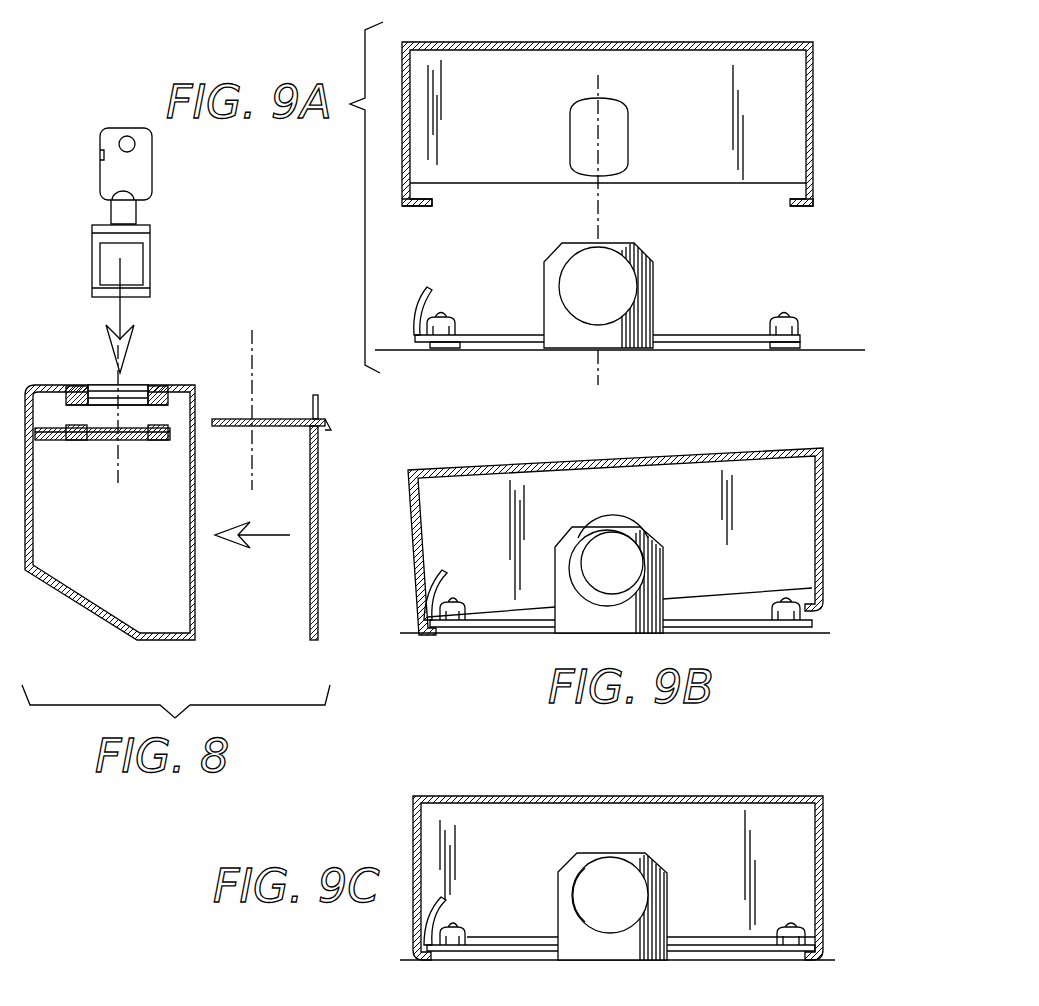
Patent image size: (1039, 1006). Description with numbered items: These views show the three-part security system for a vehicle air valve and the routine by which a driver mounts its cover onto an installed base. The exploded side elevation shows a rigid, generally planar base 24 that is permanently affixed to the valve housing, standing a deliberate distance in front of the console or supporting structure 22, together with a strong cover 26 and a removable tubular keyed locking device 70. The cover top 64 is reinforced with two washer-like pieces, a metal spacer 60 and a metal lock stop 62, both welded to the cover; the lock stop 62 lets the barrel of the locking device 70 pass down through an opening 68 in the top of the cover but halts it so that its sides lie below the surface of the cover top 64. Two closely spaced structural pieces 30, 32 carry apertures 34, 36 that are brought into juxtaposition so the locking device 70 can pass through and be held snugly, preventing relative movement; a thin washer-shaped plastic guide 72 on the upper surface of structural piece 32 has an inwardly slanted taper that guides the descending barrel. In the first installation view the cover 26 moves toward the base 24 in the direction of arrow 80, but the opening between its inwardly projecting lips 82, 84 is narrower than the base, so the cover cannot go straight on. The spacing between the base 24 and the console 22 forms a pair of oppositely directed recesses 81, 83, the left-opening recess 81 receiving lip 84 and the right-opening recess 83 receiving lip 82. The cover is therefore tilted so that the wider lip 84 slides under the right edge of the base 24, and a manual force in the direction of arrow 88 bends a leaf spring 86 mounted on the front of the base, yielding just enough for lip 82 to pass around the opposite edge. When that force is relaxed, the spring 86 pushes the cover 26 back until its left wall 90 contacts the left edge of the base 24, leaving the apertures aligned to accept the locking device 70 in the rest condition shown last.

In FIG. 9A, the supporting structure 22 is at (830, 348).
In FIG. 8, the rigid base 24 is at (310, 560).
In FIG. 9A, the rigid base 24 is at (491, 335).
In FIG. 9B, the rigid base 24 is at (735, 627).
In FIG. 9C, the rigid base 24 is at (495, 952).
In FIG. 8, the cover 26 is at (61, 606).
In FIG. 9A, the cover 26 is at (648, 40).
In FIG. 9B, the cover 26 is at (615, 541).
In FIG. 9C, the cover 26 is at (516, 795).
In FIG. 8, the structural piece 30 is at (298, 418).
In FIG. 9B, the structural piece 30 is at (609, 574).
In FIG. 9C, the structural piece 30 is at (612, 857).
In FIG. 8, the structural piece 32 is at (162, 440).
In FIG. 9A, the structural piece 32 is at (492, 128).
In FIG. 9C, the structural piece 32 is at (722, 858).
In FIG. 9A, the aperture 34 is at (608, 298).
In FIG. 9A, the aperture 36 is at (607, 148).
In FIG. 8, the metal spacer 60 is at (170, 396).
In FIG. 8, the lock stop 62 is at (170, 402).
In FIG. 8, the cover top 64 is at (165, 385).
In FIG. 8, the opening 68 is at (133, 385).
In FIG. 8, the locking device 70 is at (124, 236).
In FIG. 8, the guide 72 is at (58, 440).
In FIG. 9A, the arrow 80 is at (727, 208).
In FIG. 9A, the recess 81 is at (415, 348).
In FIG. 9A, the lip 82 is at (810, 208).
In FIG. 9A, the recess 83 is at (815, 352).
In FIG. 9A, the lip 84 is at (413, 207).
In FIG. 9A, the leaf spring 86 is at (418, 300).
In FIG. 9B, the leaf spring 86 is at (437, 588).
In FIG. 9C, the leaf spring 86 is at (435, 912).
In FIG. 9B, the arrow 88 is at (470, 437).
In FIG. 9B, the left wall 90 is at (820, 525).
In FIG. 9C, the left wall 90 is at (818, 881).